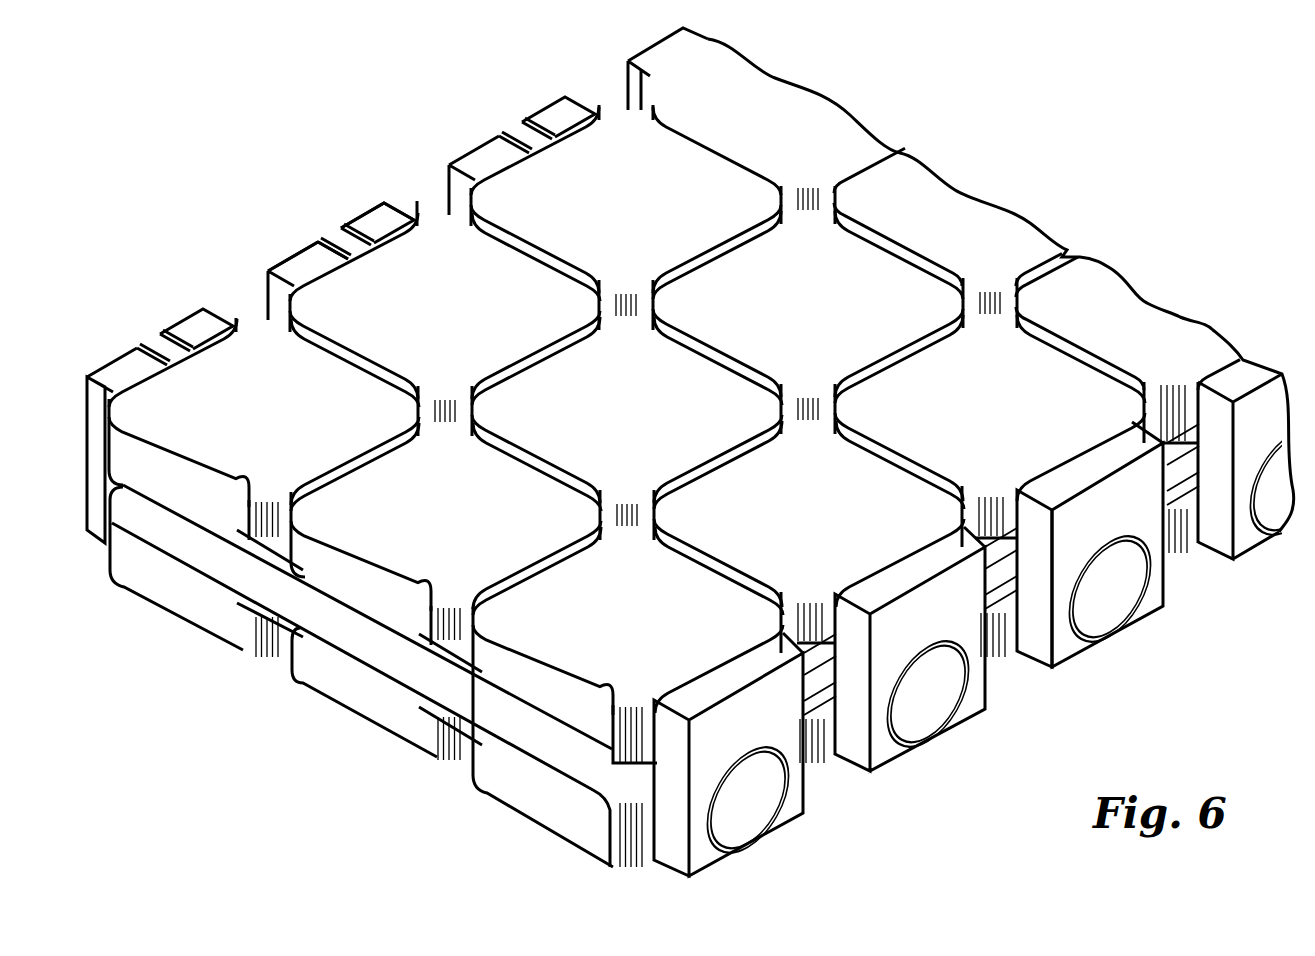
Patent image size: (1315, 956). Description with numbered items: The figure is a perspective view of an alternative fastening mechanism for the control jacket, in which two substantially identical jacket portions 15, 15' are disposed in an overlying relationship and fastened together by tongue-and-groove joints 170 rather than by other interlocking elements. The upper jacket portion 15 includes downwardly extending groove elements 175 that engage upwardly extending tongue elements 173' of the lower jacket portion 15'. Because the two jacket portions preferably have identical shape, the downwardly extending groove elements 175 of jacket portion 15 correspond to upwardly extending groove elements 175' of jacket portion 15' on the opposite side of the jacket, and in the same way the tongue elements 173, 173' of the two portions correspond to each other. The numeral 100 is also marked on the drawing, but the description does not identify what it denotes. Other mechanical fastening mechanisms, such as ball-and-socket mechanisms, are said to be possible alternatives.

The jacket portion 15 is at (674, 447).
The jacket portion 15' is at (632, 677).
The tongue element 173 is at (358, 182).
The upwardly extending groove element 175' is at (282, 236).
The connector housing 100 is at (787, 806).
The tongue-and-groove joint 170 is at (938, 745).
The downwardly extending groove element 175 is at (1089, 587).
The upwardly extending tongue element 173' is at (1107, 579).